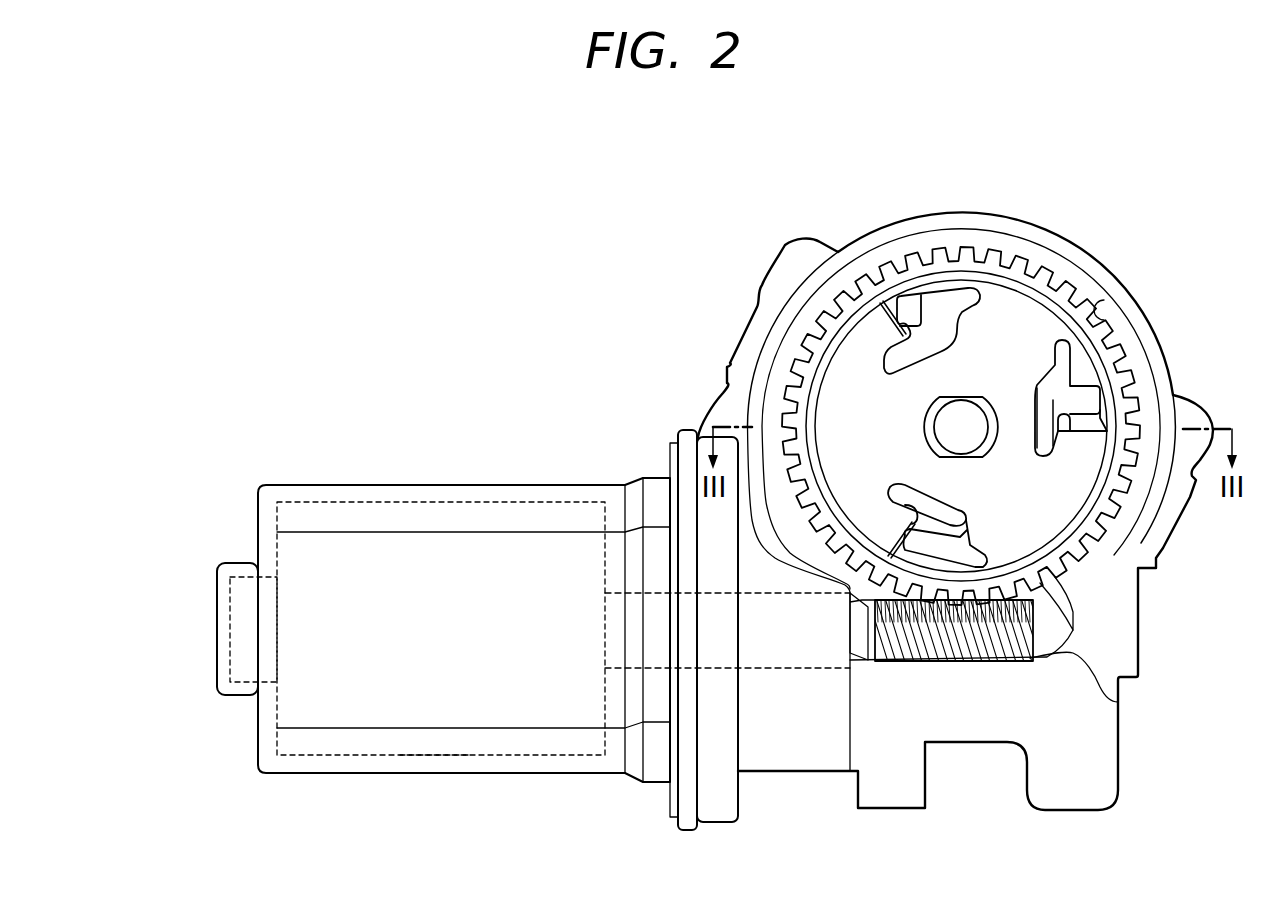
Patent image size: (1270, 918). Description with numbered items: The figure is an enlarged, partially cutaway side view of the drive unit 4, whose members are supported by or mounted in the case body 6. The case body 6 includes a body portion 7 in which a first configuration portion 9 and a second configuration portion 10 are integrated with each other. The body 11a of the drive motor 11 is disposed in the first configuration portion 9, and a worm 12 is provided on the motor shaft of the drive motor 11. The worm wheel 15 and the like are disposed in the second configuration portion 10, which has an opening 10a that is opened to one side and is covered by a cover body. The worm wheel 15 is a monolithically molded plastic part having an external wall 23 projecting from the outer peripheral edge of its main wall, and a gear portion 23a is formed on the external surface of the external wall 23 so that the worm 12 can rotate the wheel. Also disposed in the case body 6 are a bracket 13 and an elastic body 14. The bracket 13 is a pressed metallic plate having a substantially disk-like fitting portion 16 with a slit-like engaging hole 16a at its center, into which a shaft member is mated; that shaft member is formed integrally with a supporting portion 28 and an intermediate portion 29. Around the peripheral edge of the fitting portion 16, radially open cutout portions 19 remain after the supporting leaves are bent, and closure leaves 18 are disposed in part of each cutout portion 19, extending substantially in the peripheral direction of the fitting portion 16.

The drive unit 4 is at (578, 247).
The case body 6 is at (456, 484).
The body portion 7 is at (494, 773).
The first configuration portion 9 is at (548, 773).
The second configuration portion 10 is at (1105, 280).
The opening 10a is at (1130, 320).
The drive motor 11 is at (368, 773).
The body of the drive motor 11a is at (435, 773).
The worm 12 is at (1117, 687).
The bracket 13 is at (1073, 247).
The elastic body 14 is at (935, 322).
The worm wheel 15 is at (1073, 610).
The fitting portion 16 is at (868, 363).
The engaging hole 16a is at (987, 401).
The closure leaves 18 is at (888, 300).
The cutout portions 19 is at (910, 298).
The external wall 23 is at (1015, 650).
The gear portion 23a is at (1085, 630).
The supporting portion 28 is at (935, 438).
The intermediate portion 29 is at (925, 441).